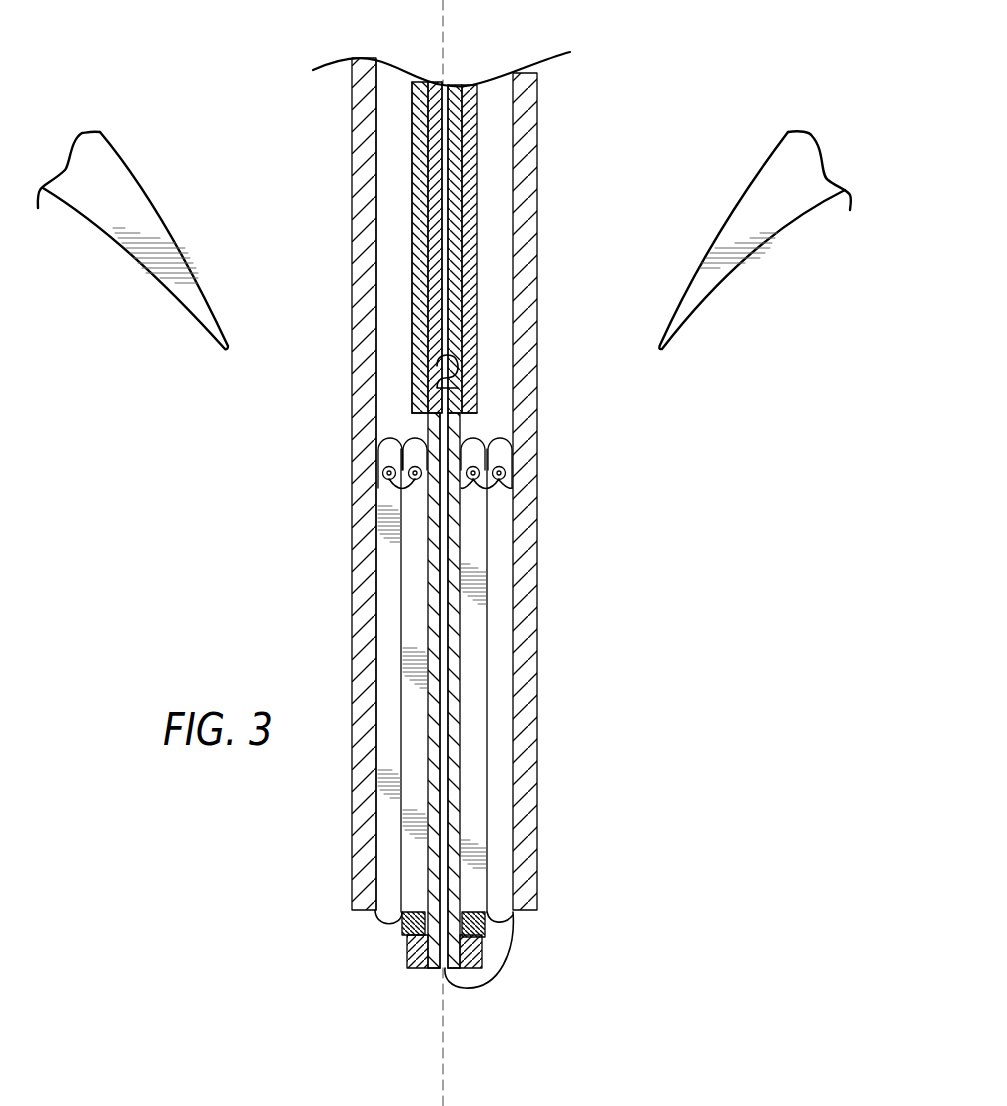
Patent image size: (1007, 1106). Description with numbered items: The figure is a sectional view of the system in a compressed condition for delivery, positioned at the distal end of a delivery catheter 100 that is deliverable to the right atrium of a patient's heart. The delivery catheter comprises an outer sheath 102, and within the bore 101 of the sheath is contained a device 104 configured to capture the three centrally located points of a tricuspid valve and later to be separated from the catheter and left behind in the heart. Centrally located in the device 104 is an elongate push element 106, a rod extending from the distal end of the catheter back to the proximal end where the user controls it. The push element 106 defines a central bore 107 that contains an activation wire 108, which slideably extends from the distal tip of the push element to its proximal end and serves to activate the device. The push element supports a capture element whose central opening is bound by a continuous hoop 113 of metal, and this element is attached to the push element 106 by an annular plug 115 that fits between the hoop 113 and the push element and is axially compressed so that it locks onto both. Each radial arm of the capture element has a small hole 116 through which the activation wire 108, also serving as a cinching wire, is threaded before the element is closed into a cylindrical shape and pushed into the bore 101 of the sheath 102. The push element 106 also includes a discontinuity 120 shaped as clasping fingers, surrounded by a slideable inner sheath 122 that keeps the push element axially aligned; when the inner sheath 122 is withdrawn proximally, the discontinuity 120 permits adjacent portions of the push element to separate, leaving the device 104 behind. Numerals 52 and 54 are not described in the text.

The delivery catheter 100 is at (600, 138).
The bore of the catheter sheath 101 is at (393, 257).
The outer sheath 102 is at (527, 285).
The device 104 is at (395, 425).
The push element 106 is at (452, 538).
The central bore 107 is at (443, 635).
The activation wire 108 is at (389, 480).
The hoop 113 is at (420, 922).
The annular plug 115 is at (417, 957).
The hole 116 is at (505, 472).
The discontinuity 120 is at (453, 362).
The inner sheath 122 is at (467, 222).
The tooth 52 is at (108, 205).
The tooth 54 is at (748, 217).